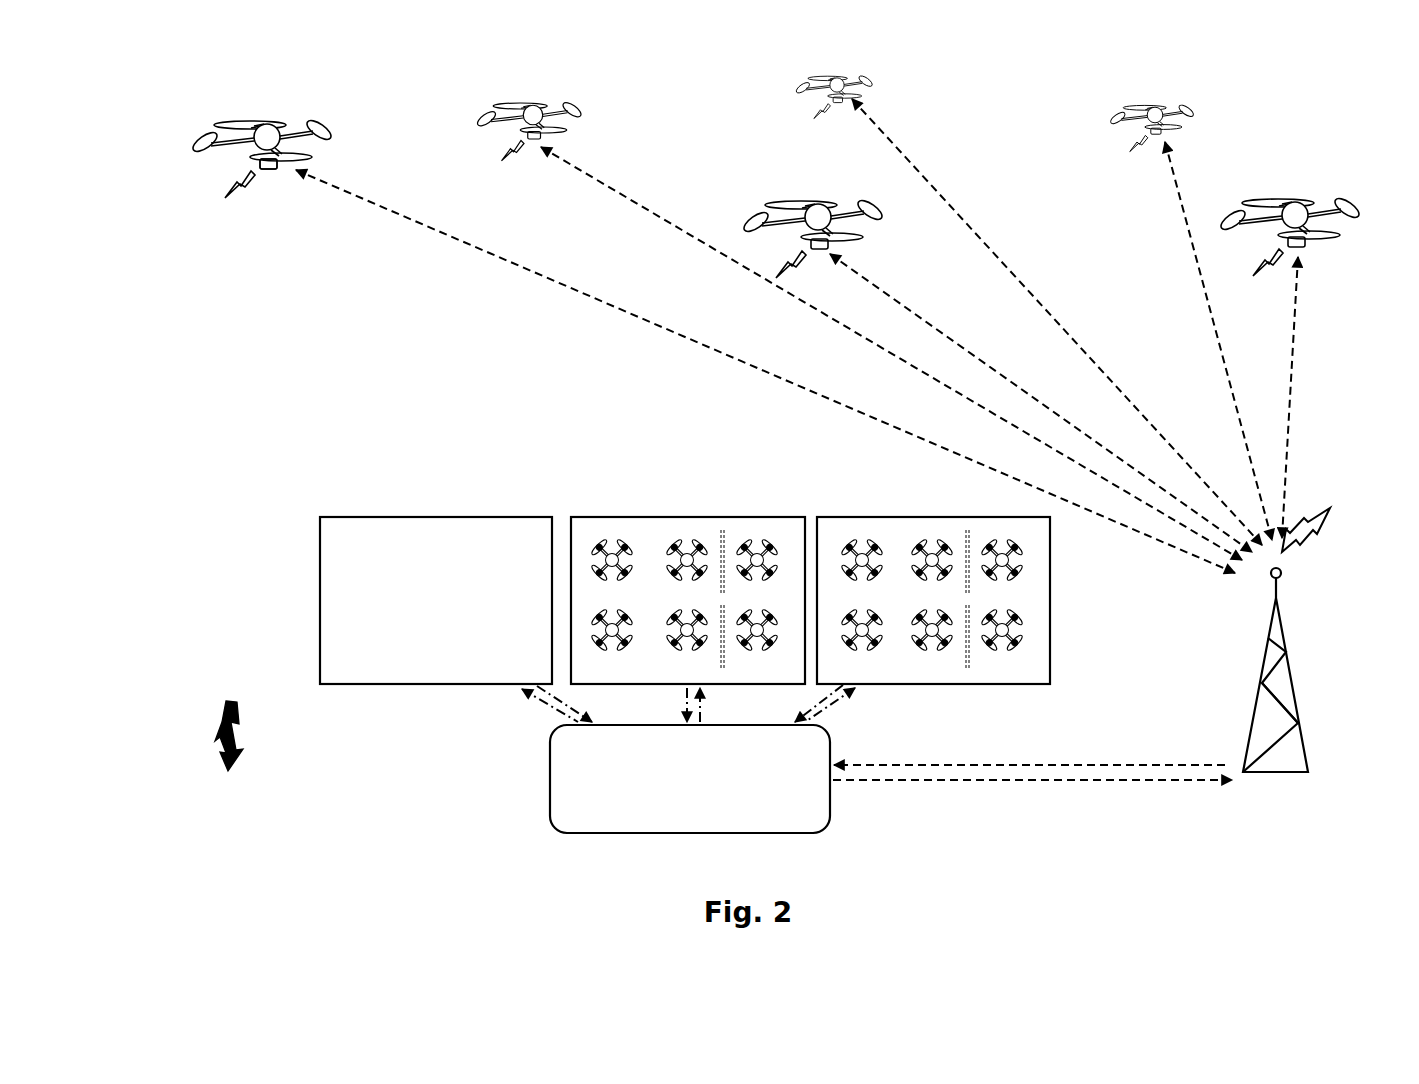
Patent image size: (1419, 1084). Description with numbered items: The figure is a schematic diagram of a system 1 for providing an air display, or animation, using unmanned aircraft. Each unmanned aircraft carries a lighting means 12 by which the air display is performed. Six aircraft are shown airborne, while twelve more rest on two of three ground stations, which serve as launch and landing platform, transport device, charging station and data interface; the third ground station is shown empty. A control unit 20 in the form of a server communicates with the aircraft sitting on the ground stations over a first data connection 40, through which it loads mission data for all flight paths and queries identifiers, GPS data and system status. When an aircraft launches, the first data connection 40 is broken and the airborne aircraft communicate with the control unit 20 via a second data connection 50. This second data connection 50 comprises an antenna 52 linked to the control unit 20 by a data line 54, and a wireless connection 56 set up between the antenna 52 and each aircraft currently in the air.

The system 1 is at (212, 758).
The lighting means 12 is at (262, 165).
The control unit 20 is at (573, 798).
The first data connection 40 is at (540, 707).
The second data connection 50 is at (1328, 575).
The antenna 52 is at (1298, 723).
The data line 54 is at (1066, 782).
The wireless connection 56 is at (1290, 432).